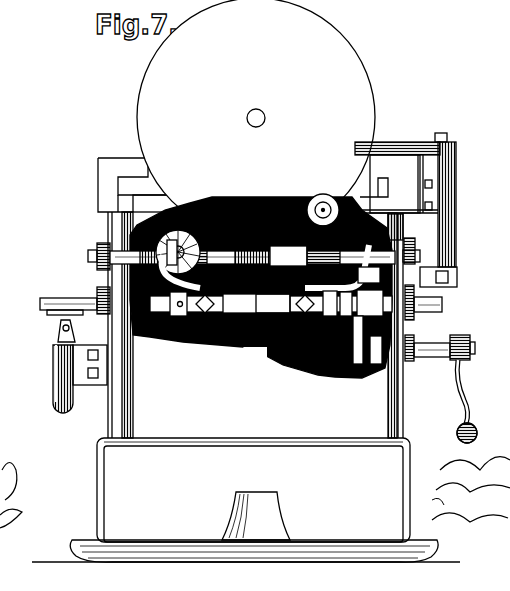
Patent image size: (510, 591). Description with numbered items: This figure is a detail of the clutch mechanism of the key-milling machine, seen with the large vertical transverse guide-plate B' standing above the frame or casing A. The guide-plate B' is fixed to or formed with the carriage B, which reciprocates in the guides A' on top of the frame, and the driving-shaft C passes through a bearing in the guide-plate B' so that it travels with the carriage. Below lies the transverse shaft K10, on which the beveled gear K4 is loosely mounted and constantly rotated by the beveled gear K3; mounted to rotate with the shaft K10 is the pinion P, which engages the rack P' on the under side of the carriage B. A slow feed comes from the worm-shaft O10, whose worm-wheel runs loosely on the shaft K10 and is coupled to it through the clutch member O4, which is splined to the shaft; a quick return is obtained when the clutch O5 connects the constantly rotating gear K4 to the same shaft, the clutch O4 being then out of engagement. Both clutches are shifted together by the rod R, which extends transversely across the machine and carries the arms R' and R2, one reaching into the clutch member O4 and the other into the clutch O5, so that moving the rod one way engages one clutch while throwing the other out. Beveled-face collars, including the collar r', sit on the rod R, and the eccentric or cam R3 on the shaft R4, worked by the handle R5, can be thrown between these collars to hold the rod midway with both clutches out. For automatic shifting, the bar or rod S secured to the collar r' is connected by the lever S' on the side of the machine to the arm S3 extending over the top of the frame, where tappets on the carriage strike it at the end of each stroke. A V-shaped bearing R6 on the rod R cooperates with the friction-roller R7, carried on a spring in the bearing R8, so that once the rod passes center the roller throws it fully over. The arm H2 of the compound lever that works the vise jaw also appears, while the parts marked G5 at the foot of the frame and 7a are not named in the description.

The frame A is at (246, 479).
The guides A' is at (268, 166).
The carriage B is at (172, 188).
The vertical transverse guide-plate B' is at (256, 118).
The driving-shaft C is at (265, 118).
The pedestal foot G5 is at (242, 506).
The arm S3 is at (425, 142).
The lever S' is at (455, 200).
The bar or rod S is at (427, 293).
The beveled gear K3 is at (175, 237).
The beveled gear K4 is at (210, 226).
The transverse shaft K10 is at (88, 256).
The clutch O5 is at (182, 238).
The worm-shaft O10 is at (333, 195).
The clutch member O4 is at (383, 236).
The pinion P is at (251, 222).
The rack P' is at (284, 218).
The arm H2 is at (256, 350).
The rod R is at (75, 293).
The arm R' is at (273, 303).
The arm R2 is at (256, 303).
The eccentric or cam R3 is at (357, 378).
The shaft R4 is at (444, 355).
The handle R5 is at (477, 401).
The V-shaped bearing R6 is at (62, 320).
The friction-roller R7 is at (78, 326).
The bearing R8 is at (51, 379).
The collar r' is at (408, 340).
The collar 7a is at (348, 312).